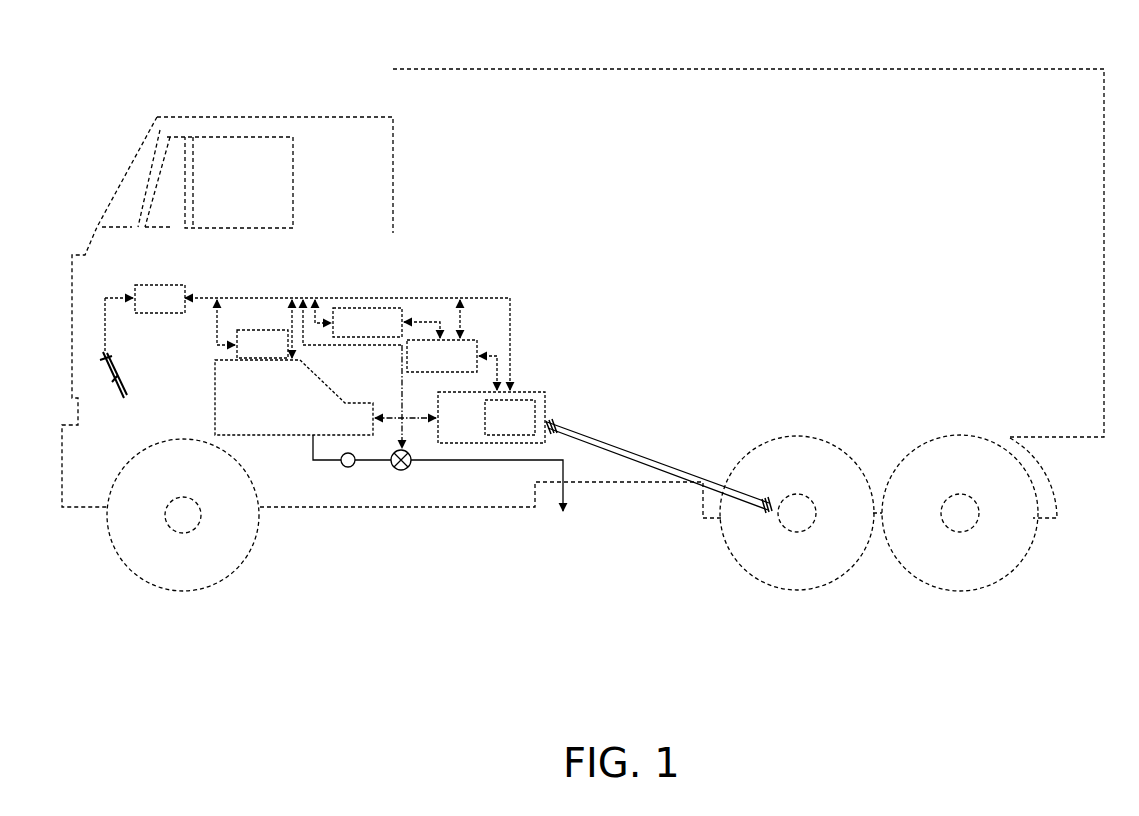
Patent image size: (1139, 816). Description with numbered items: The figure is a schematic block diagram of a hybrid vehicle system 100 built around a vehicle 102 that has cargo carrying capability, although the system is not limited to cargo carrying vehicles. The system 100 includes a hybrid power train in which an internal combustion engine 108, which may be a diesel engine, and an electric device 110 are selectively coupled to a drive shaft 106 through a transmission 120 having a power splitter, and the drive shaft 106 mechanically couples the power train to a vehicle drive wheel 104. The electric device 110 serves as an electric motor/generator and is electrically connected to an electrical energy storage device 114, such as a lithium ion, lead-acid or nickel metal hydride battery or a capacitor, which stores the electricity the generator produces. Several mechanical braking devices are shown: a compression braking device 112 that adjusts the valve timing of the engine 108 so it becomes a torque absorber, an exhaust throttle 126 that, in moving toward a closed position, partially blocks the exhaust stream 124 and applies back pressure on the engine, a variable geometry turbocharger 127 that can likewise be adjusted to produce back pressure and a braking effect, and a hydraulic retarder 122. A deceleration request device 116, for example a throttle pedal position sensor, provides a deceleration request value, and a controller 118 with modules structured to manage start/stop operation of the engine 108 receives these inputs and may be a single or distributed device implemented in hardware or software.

The system 100 is at (199, 60).
The vehicle 102 is at (260, 116).
The vehicle drive wheel 104 is at (797, 590).
The drive shaft 106 is at (650, 457).
The internal combustion engine 108 is at (291, 408).
The electric device 110 is at (461, 368).
The compression braking device 112 is at (281, 356).
The electrical energy storage device 114 is at (387, 334).
The deceleration request device 116 is at (110, 360).
The controller 118 is at (179, 311).
The transmission 120 is at (482, 432).
The hydraulic retarder 122 is at (529, 432).
The exhaust stream 124 is at (474, 461).
The exhaust throttle 126 is at (403, 471).
The variable geometry turbocharger 127 is at (348, 468).